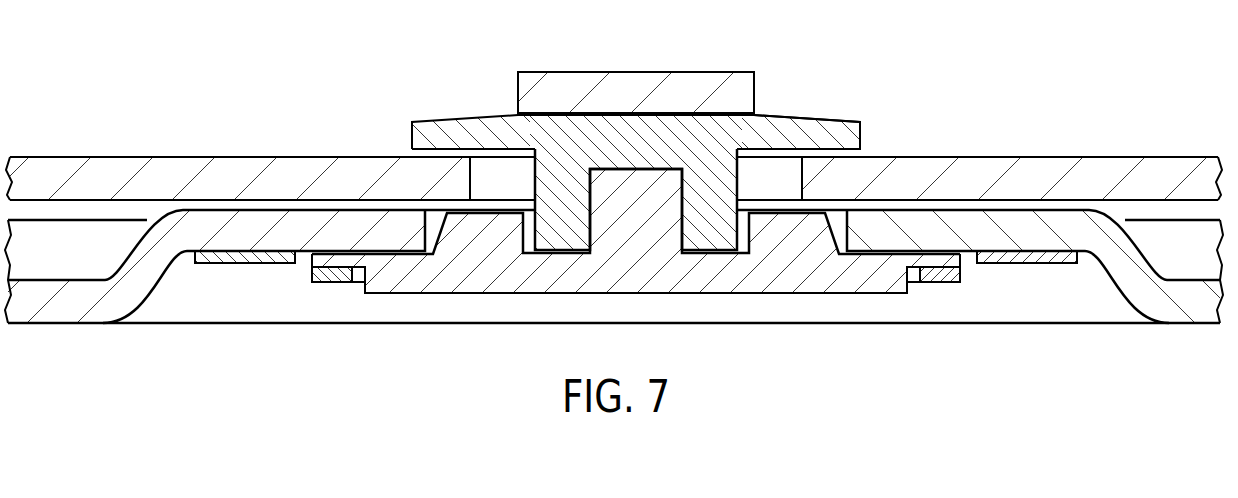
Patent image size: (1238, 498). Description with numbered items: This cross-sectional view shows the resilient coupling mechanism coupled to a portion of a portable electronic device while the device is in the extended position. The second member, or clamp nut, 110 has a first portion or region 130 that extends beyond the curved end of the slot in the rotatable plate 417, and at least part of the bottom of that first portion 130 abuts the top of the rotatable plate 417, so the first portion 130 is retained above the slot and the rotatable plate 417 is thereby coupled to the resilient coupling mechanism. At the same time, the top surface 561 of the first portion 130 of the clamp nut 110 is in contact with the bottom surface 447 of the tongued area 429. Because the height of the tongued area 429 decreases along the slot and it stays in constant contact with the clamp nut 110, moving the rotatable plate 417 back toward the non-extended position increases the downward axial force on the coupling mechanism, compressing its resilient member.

The second member (or clamp nut) 110 is at (412, 130).
The first portion/region of the second member 130 is at (868, 128).
The rotatable plate 417 is at (1088, 157).
The tongued area 429 is at (622, 72).
The bottom surface of the tongued area 447 is at (525, 118).
The top surface of first portion/region 561 is at (792, 112).